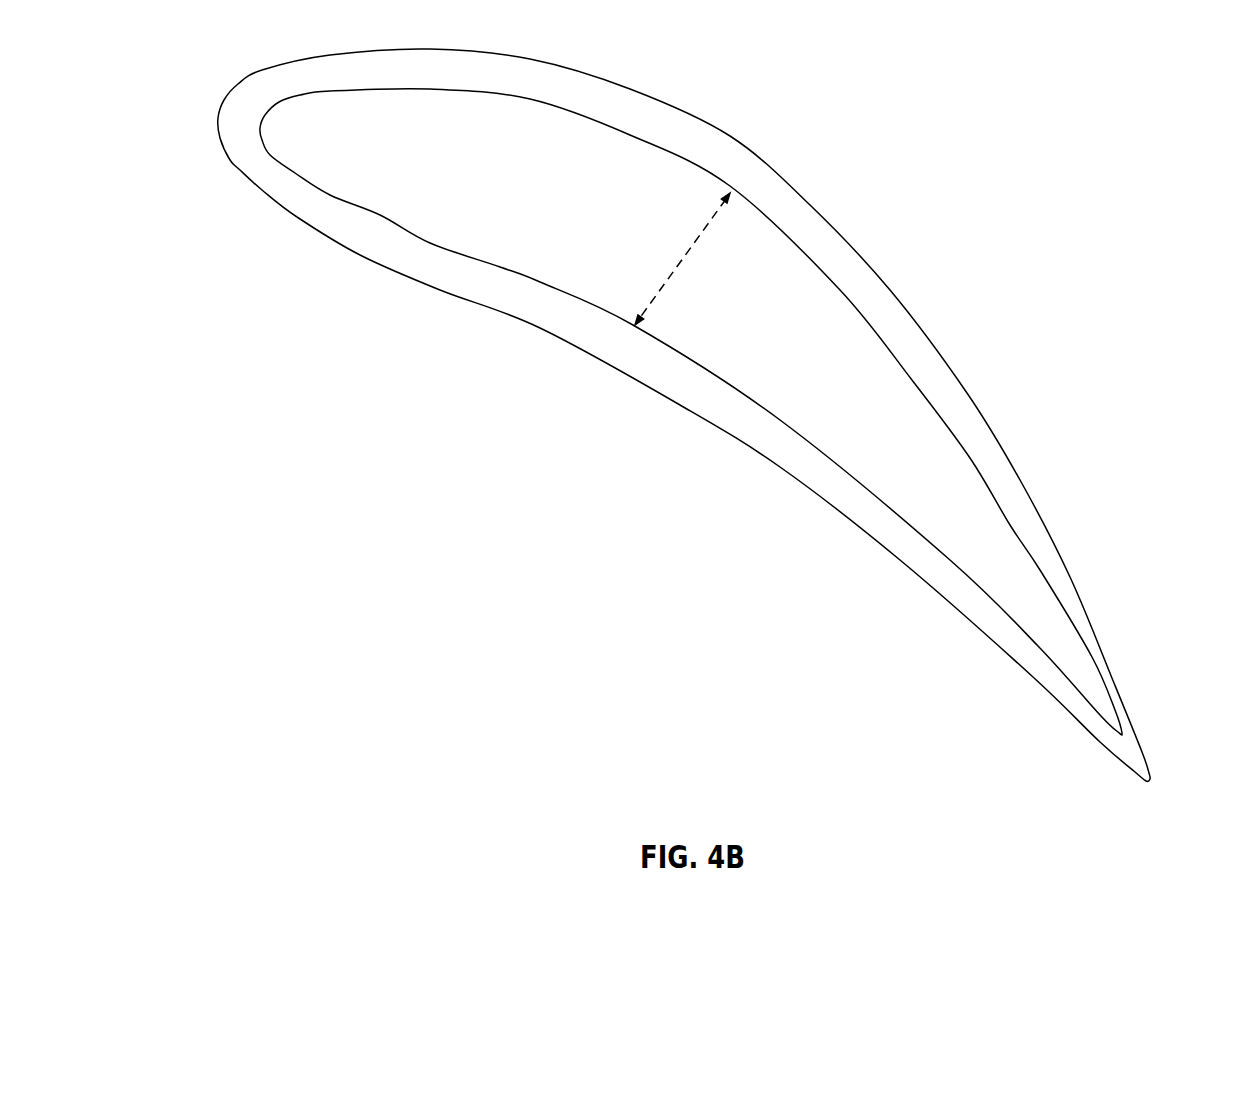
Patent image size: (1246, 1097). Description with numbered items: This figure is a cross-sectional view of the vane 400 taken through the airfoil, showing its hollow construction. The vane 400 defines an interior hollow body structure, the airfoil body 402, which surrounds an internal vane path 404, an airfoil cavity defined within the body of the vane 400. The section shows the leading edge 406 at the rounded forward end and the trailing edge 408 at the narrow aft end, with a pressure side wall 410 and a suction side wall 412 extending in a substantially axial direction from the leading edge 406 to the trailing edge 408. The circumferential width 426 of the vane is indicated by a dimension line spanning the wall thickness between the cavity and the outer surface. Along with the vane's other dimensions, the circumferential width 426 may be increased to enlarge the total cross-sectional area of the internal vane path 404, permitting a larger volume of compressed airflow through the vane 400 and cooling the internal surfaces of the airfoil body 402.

The vane 400 is at (685, 421).
The airfoil body 402 is at (685, 433).
The internal vane path 404 is at (684, 200).
The leading edge 406 is at (220, 108).
The trailing edge 408 is at (1151, 779).
The pressure side wall 410 is at (682, 415).
The suction side wall 412 is at (828, 211).
The circumferential width 426 is at (676, 262).